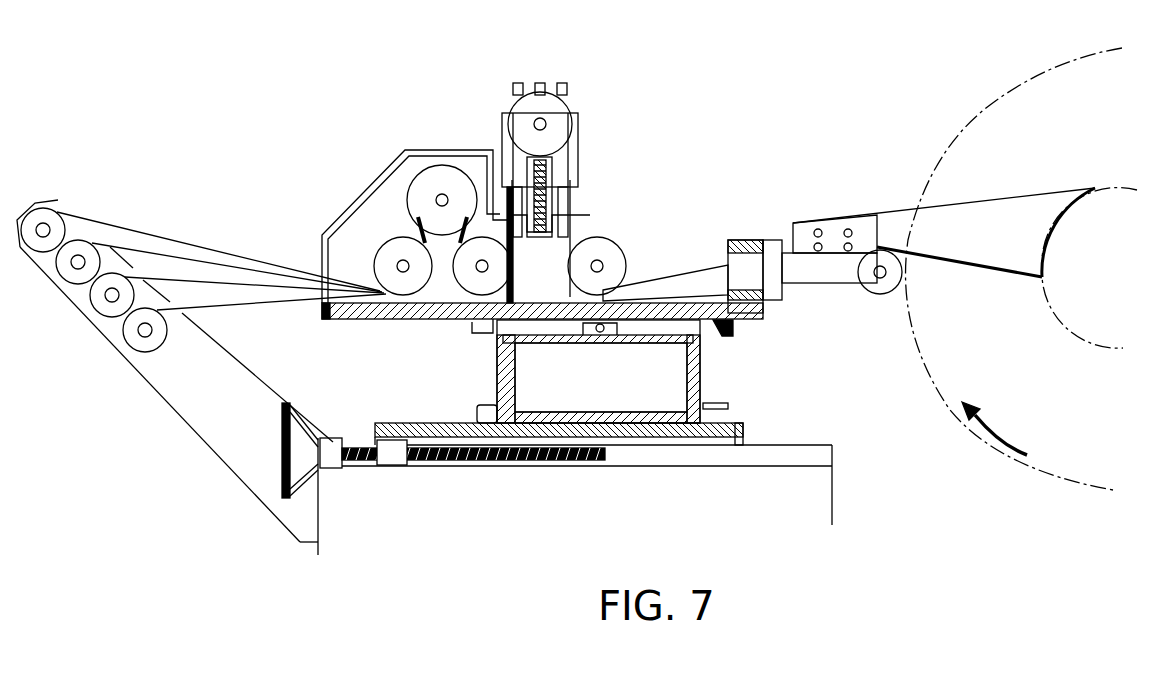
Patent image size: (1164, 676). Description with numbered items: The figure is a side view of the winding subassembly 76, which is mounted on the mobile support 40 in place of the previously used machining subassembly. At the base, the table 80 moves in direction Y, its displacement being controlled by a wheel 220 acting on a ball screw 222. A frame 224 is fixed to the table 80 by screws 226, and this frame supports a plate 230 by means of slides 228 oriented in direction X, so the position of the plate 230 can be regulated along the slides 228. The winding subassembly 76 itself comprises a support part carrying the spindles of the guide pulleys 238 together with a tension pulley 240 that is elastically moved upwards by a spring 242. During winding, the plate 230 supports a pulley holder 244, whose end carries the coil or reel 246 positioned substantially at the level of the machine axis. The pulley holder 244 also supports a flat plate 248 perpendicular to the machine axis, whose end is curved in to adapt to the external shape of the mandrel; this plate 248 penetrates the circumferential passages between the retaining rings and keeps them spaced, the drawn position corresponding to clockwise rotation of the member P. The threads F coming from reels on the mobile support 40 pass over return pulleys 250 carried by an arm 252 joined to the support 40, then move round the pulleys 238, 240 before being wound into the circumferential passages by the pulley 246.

The return pulleys 250 is at (68, 183).
The arm 252 is at (233, 380).
The threads F is at (170, 253).
The winding subassembly 76 is at (690, 197).
The guide pulleys 238 is at (402, 244).
The tension pulley 240 is at (523, 110).
The spring 242 is at (553, 170).
The plate 230 is at (662, 297).
The slides 228 is at (720, 334).
The pulley holder 244 is at (833, 277).
The coil or reel 246 is at (900, 273).
The flat plate 248 is at (927, 223).
The member P is at (1077, 53).
The frame 224 is at (700, 367).
The screws 226 is at (485, 405).
The table 80 is at (743, 428).
The mobile support 40 is at (832, 488).
The wheel 220 is at (290, 497).
The ball screw 222 is at (557, 455).